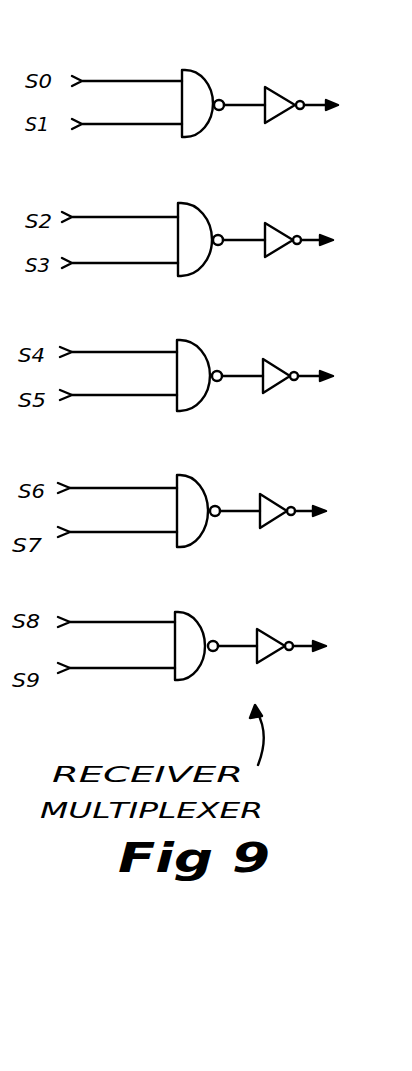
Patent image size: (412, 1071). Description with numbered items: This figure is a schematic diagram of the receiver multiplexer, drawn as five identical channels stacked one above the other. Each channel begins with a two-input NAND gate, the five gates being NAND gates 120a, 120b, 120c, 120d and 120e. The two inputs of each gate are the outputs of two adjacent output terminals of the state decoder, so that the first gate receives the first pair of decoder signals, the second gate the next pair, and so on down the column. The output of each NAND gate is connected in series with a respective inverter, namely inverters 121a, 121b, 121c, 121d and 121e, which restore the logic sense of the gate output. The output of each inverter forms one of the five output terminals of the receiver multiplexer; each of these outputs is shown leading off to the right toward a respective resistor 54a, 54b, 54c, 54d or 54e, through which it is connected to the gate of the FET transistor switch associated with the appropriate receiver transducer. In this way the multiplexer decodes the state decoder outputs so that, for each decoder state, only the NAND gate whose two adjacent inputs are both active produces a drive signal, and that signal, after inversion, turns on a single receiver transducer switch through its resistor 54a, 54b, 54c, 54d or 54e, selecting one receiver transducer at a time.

The NAND gate 120a is at (197, 90).
The NAND gate 120b is at (196, 227).
The NAND gate 120c is at (196, 363).
The NAND gate 120d is at (197, 498).
The NAND gate 120e is at (196, 631).
The inverter 121a is at (286, 89).
The inverter 121b is at (286, 225).
The inverter 121c is at (282, 361).
The inverter 121d is at (279, 498).
The inverter 121e is at (280, 634).
The resistor 54a is at (351, 97).
The resistor 54b is at (345, 233).
The resistor 54c is at (343, 368).
The resistor 54d is at (343, 501).
The resistor 54e is at (340, 637).